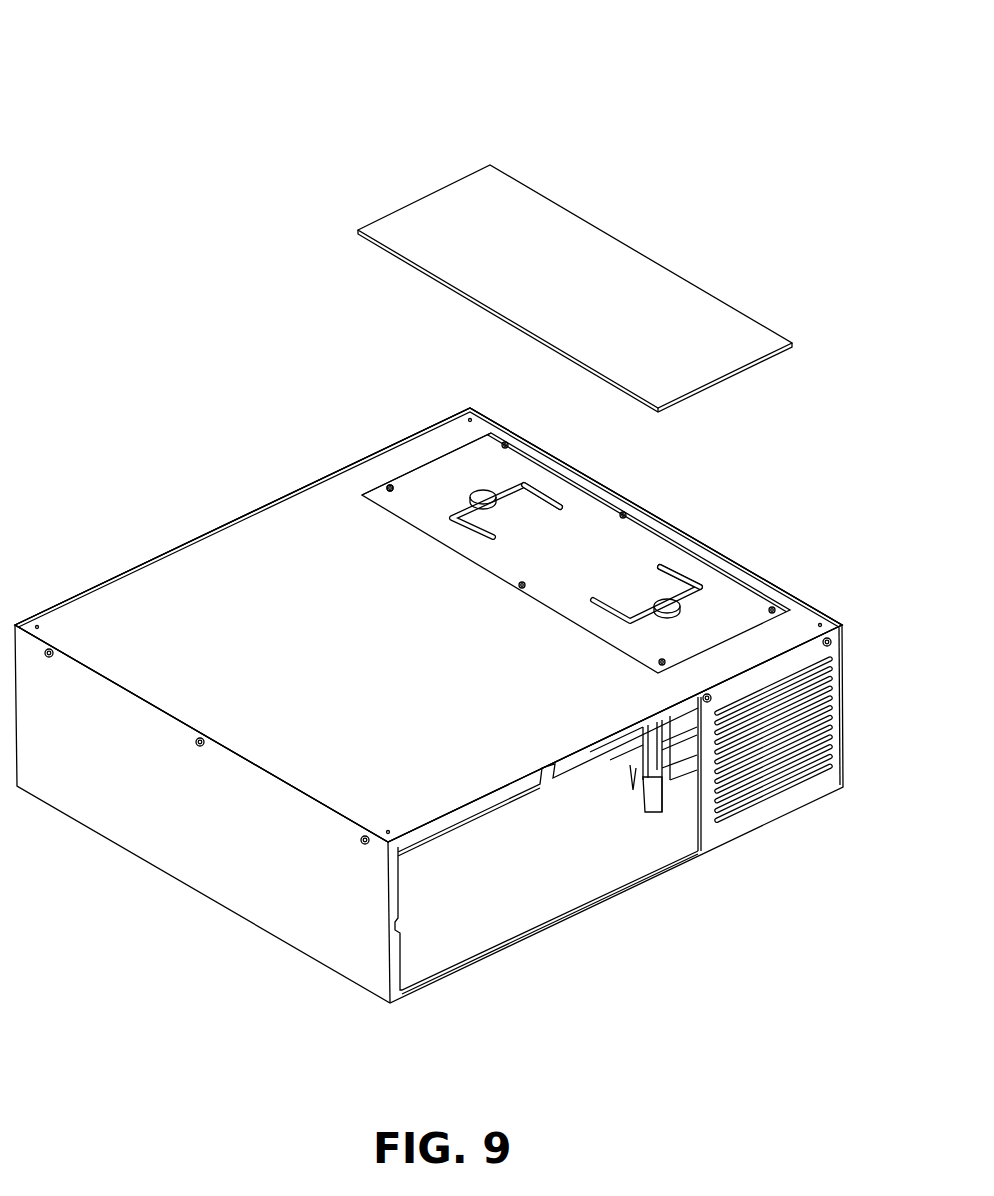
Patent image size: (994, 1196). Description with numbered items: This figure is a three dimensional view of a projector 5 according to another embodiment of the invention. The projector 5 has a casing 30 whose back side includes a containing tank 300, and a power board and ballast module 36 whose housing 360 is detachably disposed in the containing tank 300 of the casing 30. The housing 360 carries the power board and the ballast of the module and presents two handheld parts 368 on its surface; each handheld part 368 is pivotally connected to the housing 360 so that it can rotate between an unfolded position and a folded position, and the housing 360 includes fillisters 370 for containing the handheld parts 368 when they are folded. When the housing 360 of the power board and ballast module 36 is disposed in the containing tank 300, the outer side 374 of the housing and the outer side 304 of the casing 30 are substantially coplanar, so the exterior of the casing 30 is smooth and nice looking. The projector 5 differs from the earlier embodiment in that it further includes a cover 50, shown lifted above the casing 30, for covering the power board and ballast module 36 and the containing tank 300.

The projector 5 is at (203, 90).
The cover 50 is at (618, 278).
The casing 30 is at (77, 594).
The outer side of the casing 304 is at (160, 600).
The containing tank 300 is at (727, 557).
The power board and ballast module 36 is at (642, 546).
The housing 360 is at (520, 468).
The handheld part 368 is at (486, 493).
The fillister 370 is at (552, 488).
The outer side of the housing 374 is at (417, 497).